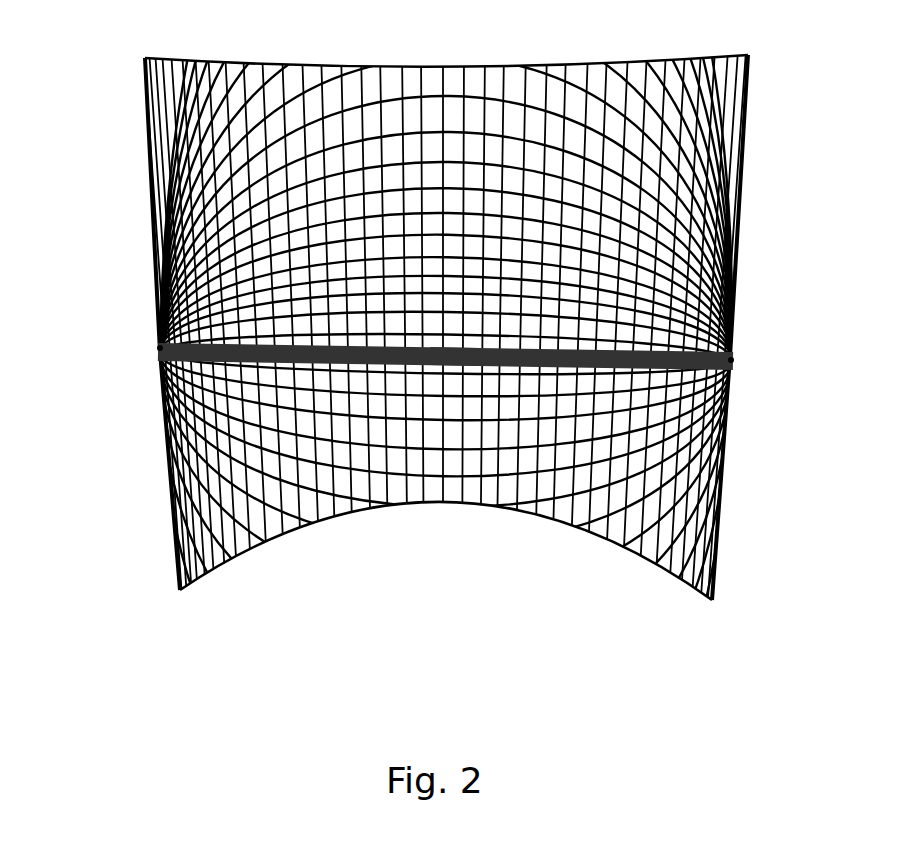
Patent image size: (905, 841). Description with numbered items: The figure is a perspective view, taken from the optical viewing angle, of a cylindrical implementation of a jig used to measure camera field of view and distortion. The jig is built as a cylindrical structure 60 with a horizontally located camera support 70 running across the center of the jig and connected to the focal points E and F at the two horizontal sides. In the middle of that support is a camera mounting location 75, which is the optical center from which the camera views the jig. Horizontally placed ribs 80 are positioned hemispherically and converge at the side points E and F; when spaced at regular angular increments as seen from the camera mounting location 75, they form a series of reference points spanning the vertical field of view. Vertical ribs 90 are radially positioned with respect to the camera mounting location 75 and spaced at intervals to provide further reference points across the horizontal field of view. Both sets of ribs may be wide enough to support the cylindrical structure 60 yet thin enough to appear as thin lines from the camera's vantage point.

The cylindrical structure 60 is at (113, 82).
The camera support 70 is at (222, 346).
The camera mounting location 75 is at (458, 353).
The horizontal ribs 80 is at (318, 237).
The vertical ribs 90 is at (423, 160).
The focal point E is at (160, 342).
The focal point F is at (733, 359).